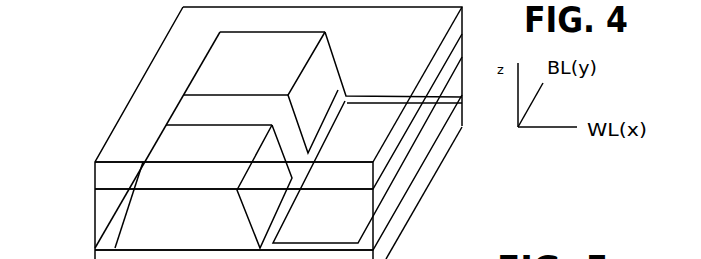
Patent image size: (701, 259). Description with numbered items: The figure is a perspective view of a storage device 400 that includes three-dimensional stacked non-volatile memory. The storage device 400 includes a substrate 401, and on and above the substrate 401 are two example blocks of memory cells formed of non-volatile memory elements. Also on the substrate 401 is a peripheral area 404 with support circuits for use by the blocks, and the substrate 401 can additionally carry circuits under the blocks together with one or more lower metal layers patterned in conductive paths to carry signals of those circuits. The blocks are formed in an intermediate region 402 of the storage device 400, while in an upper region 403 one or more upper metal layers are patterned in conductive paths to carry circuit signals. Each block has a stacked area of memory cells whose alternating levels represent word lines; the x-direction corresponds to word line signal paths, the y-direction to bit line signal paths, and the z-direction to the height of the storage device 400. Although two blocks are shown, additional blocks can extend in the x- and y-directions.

The storage device 400 is at (103, 46).
The substrate 401 is at (95, 258).
The intermediate region 402 is at (95, 219).
The upper region 403 is at (95, 175).
The peripheral area 404 is at (367, 150).